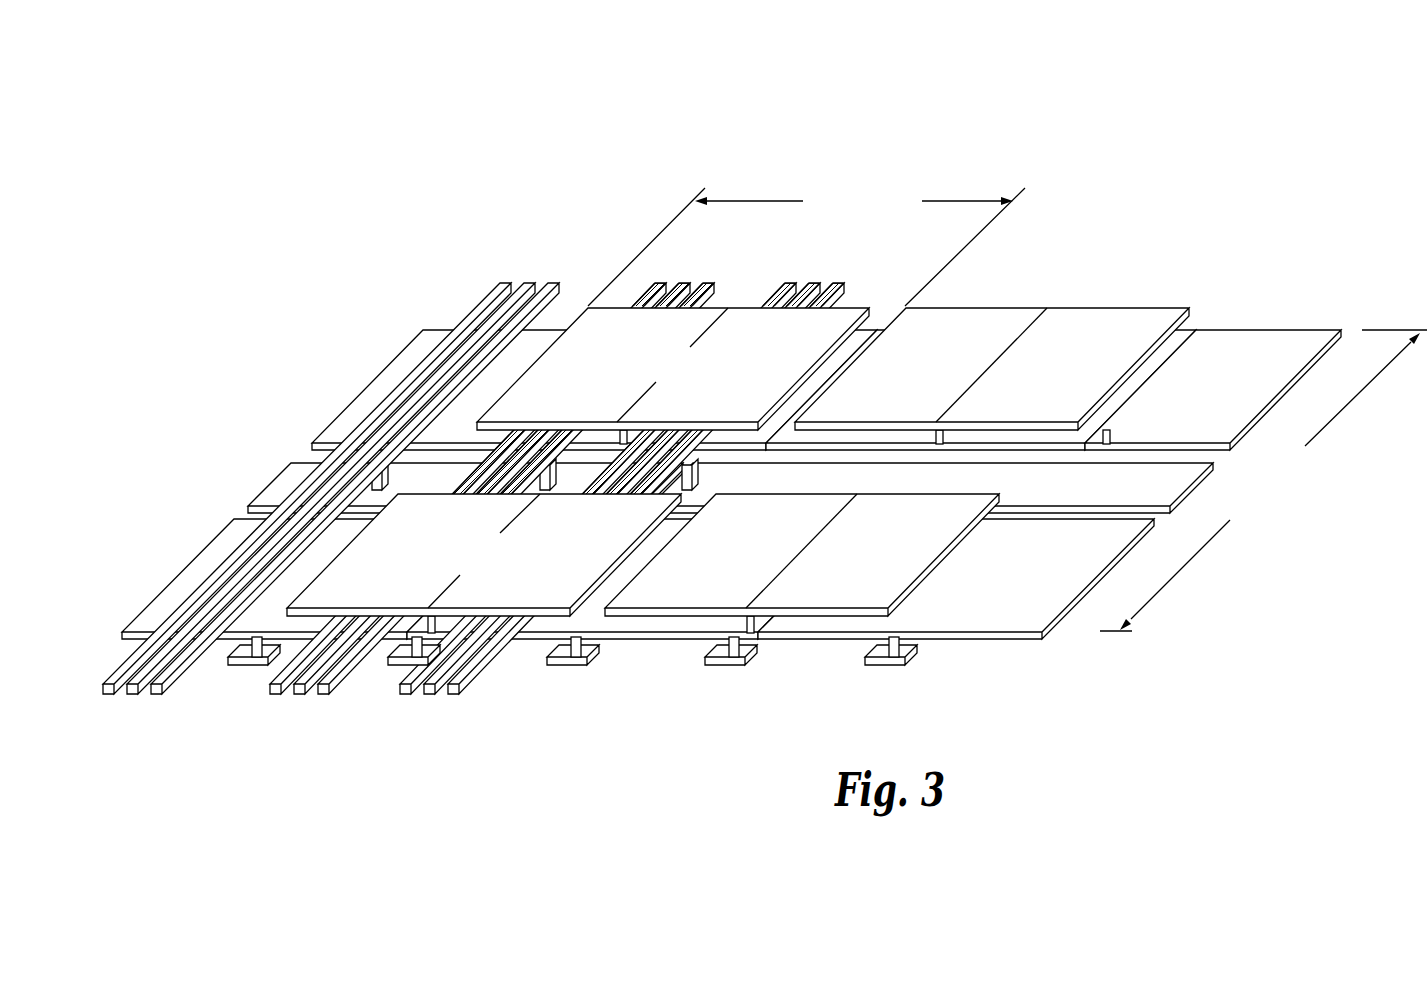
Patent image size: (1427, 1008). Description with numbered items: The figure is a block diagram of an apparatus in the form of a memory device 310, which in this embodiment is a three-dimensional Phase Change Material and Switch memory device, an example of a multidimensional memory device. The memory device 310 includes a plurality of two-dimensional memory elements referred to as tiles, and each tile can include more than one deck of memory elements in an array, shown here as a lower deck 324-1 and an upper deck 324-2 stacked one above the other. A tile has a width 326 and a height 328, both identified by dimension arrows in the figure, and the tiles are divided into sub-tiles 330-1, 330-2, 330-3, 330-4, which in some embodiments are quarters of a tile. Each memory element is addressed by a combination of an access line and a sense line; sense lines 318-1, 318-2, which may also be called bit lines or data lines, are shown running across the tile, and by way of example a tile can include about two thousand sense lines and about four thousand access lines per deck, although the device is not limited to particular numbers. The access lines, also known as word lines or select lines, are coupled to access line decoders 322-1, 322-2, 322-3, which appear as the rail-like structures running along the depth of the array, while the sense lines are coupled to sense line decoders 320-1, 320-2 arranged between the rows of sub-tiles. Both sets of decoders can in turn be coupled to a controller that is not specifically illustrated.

The memory device 310 is at (278, 241).
The sense line 318-1 is at (706, 268).
The sense line 318-2 is at (836, 268).
The sense line decoder 320-1 is at (290, 487).
The sense line decoder 320-2 is at (835, 492).
The access line decoder 322-1 is at (242, 663).
The access line decoder 322-2 is at (388, 663).
The access line decoder 322-3 is at (565, 661).
The lower deck 324-1 is at (647, 692).
The upper deck 324-2 is at (580, 266).
The width 326 is at (790, 201).
The height 328 is at (1202, 555).
The sub-tile 330-1 is at (543, 632).
The sub-tile 330-2 is at (602, 308).
The sub-tile 330-3 is at (512, 561).
The sub-tile 330-4 is at (703, 375).